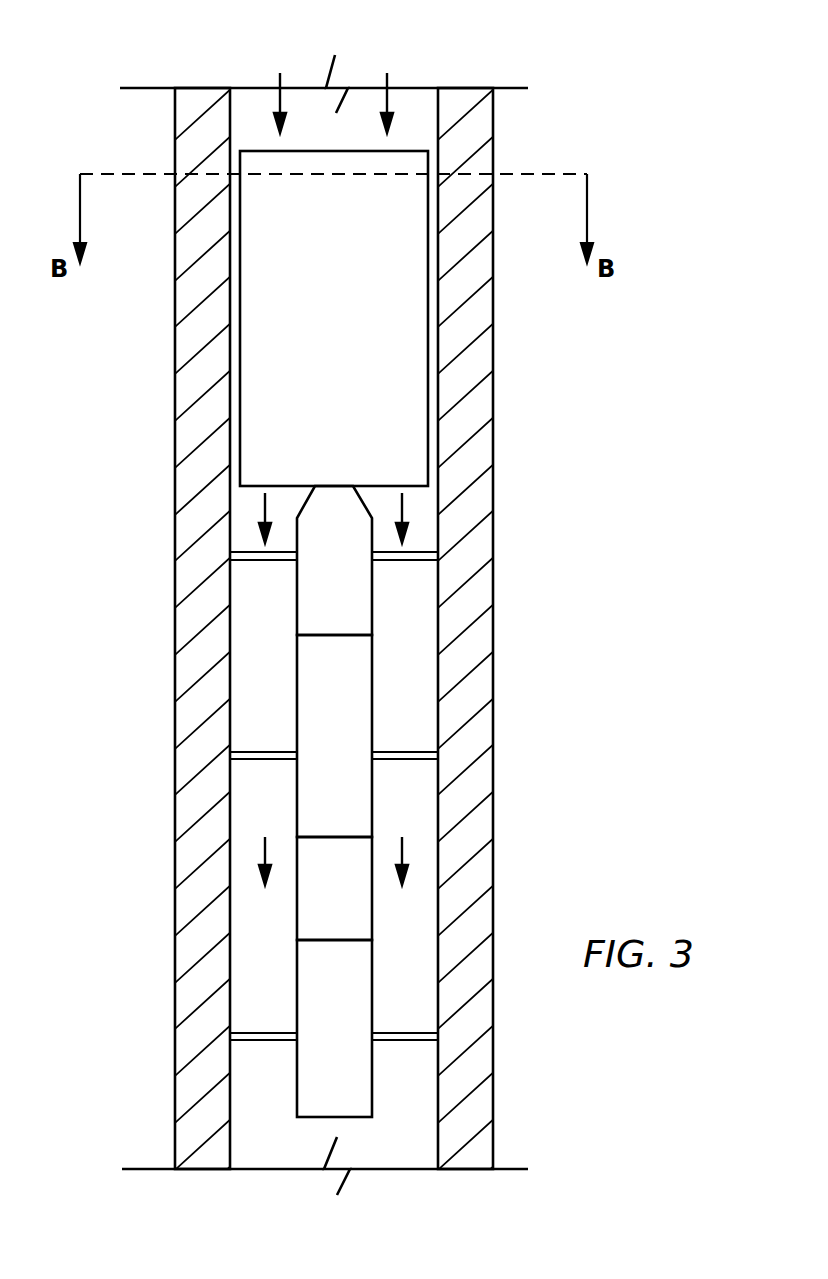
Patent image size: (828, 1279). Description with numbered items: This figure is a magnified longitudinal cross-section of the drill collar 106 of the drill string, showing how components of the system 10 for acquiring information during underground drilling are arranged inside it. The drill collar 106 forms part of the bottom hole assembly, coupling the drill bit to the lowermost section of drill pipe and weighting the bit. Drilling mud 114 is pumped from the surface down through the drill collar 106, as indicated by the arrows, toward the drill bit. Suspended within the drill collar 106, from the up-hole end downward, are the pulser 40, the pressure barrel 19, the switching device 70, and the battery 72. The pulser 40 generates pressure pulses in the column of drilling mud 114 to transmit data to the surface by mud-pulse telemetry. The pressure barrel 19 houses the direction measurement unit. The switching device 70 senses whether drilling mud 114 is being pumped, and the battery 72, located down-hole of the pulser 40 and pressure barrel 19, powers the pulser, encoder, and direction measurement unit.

The system 10 is at (273, 1117).
The pressure barrel 19 is at (318, 736).
The pulser 40 is at (318, 311).
The switching device 70 is at (318, 910).
The battery 72 is at (317, 1024).
The drill collar 106 is at (483, 153).
The drilling mud 114 is at (387, 73).